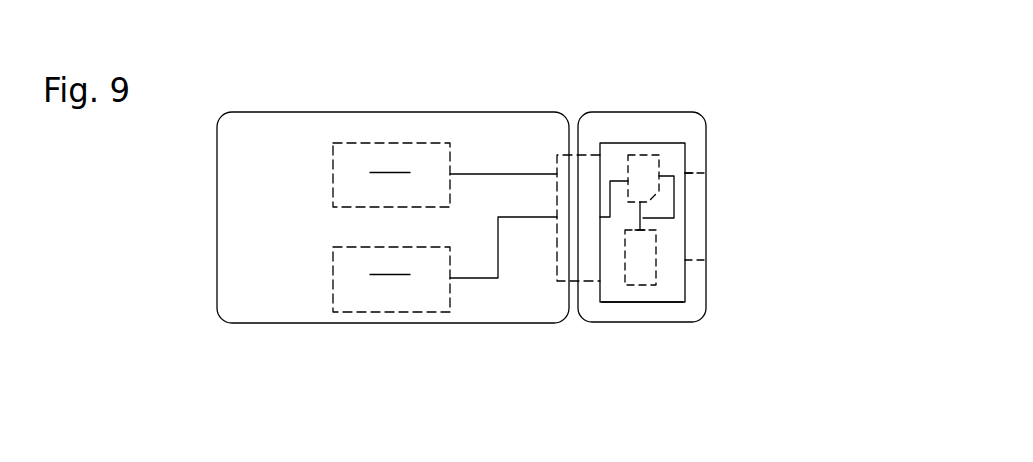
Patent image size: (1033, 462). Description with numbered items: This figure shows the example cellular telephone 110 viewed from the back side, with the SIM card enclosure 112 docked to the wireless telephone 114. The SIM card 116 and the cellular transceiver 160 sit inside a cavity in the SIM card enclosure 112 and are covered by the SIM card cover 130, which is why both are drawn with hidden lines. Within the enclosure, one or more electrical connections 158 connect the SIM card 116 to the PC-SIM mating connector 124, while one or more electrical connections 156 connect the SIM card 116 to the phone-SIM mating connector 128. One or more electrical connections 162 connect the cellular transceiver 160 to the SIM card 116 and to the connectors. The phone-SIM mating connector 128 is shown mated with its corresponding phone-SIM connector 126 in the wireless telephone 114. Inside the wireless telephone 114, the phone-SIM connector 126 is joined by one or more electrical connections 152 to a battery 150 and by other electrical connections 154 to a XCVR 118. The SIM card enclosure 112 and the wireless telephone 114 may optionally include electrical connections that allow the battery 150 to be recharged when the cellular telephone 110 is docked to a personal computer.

The cellular telephone 110 is at (739, 88).
The SIM card enclosure 112 is at (703, 322).
The wireless telephone 114 is at (236, 112).
The SIM card 116 is at (647, 155).
The XCVR 118 is at (391, 279).
The PC-SIM mating connector 124 is at (693, 173).
The phone-SIM connector 126 is at (562, 150).
The phone-SIM mating connector 128 is at (587, 153).
The SIM card cover 130 is at (610, 302).
The battery 150 is at (391, 175).
The electrical connections 152 is at (500, 173).
The electrical connections 154 is at (483, 278).
The electrical connections 156 is at (628, 178).
The electrical connections 158 is at (675, 192).
The cellular transceiver 160 is at (648, 285).
The electrical connections 162 is at (643, 218).